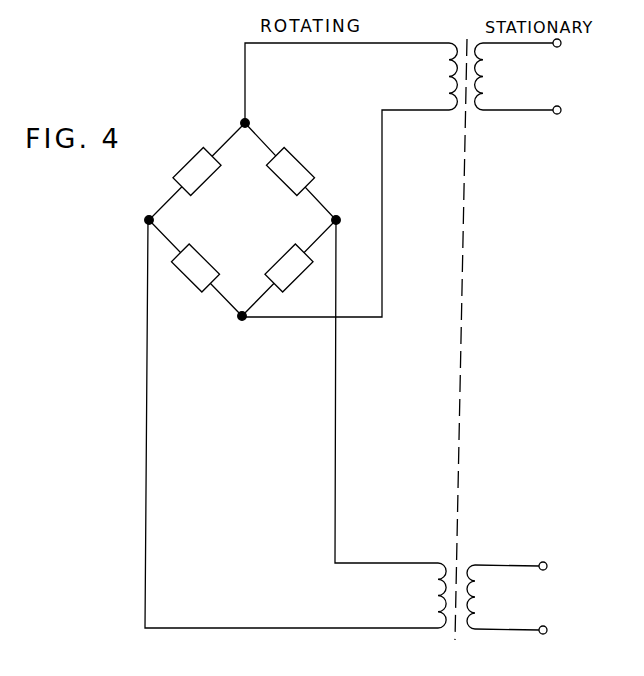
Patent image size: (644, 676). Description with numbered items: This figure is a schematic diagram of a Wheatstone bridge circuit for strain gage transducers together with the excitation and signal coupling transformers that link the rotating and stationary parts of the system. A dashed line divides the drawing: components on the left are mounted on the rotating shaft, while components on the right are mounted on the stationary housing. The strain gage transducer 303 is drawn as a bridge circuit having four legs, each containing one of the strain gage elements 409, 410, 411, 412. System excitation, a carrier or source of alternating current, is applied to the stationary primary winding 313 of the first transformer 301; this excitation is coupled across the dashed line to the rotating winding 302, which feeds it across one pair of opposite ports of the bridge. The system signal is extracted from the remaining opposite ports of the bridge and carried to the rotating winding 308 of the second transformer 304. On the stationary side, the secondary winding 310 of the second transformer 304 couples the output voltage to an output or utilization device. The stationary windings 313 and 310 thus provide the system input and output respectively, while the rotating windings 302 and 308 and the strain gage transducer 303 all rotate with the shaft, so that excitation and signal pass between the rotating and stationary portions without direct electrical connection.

The first transformer 301 is at (476, 107).
The rotating winding 302 is at (451, 72).
The strain gage transducer 303 is at (170, 156).
The second transformer 304 is at (462, 563).
The rotating winding 308 is at (438, 597).
The secondary winding 310 is at (478, 593).
The primary winding 313 is at (485, 72).
The strain gage element 409 is at (186, 282).
The strain gage element 410 is at (201, 182).
The strain gage element 411 is at (318, 143).
The strain gage element 412 is at (284, 256).